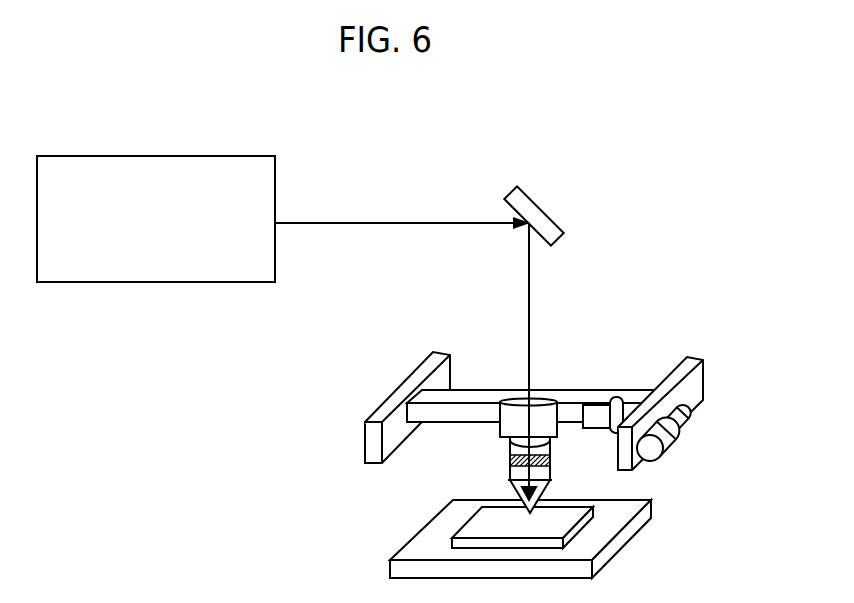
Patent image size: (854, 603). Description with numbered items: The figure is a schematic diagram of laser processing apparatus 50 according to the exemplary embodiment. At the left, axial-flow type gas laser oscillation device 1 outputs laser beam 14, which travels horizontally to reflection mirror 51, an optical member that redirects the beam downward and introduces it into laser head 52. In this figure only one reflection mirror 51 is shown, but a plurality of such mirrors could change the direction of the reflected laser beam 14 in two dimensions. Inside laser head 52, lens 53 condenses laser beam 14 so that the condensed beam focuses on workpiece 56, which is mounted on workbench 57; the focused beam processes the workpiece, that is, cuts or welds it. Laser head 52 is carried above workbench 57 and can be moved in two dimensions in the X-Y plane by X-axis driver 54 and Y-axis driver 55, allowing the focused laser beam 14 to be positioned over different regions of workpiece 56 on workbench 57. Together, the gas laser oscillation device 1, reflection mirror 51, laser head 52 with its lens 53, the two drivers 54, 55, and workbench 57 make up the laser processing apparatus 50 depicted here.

The laser processing apparatus 50 is at (188, 69).
The axial-flow type gas laser oscillation device 1 is at (142, 156).
The laser beam 14 is at (405, 345).
The reflection mirror 51 is at (539, 212).
The laser head 52 is at (513, 475).
The lens 53 is at (510, 460).
The X-axis driver 54 is at (617, 407).
The Y-axis driver 55 is at (667, 443).
The workpiece 56 is at (565, 523).
The workbench 57 is at (607, 567).